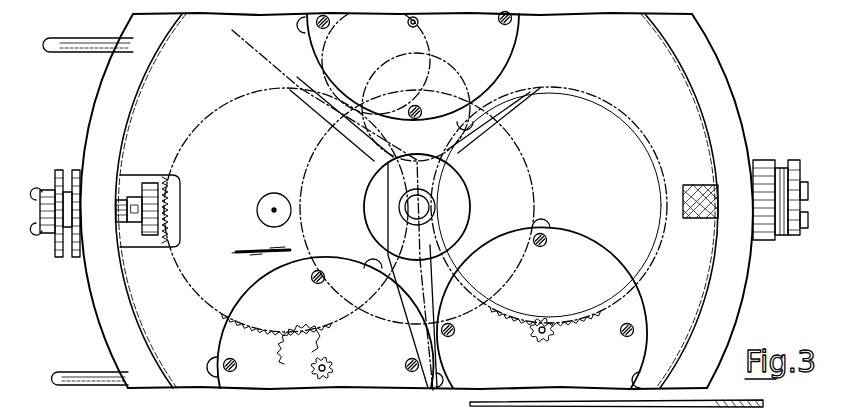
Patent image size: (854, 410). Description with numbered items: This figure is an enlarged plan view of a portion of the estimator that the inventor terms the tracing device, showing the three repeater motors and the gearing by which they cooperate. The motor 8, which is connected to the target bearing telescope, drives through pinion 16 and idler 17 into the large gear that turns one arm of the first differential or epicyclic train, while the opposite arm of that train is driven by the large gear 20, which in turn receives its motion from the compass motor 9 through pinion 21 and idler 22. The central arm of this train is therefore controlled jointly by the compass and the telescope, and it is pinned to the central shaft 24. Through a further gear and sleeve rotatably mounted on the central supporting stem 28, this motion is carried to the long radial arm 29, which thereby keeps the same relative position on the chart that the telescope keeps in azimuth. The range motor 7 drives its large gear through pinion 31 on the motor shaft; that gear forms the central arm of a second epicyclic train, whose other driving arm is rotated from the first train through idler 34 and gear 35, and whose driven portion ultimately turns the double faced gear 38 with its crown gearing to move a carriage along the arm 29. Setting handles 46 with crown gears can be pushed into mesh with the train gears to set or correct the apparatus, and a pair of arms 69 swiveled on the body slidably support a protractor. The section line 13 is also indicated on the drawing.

The section line 13- 13 is at (205, 23).
The long radial arm 29 is at (44, 194).
The setting handle 46 is at (167, 188).
The central shaft 24 is at (272, 207).
The idler 22 is at (338, 32).
The pinion 21 is at (419, 26).
The compass motor 9 is at (413, 66).
The idler 34 is at (470, 80).
The double faced gear 38 is at (520, 152).
The gear 35 is at (662, 160).
The central supporting stem 28 is at (417, 189).
The large gear 20 is at (194, 283).
The arm 69 is at (68, 372).
The motor 8 is at (326, 322).
The idler 17 is at (319, 340).
The pinion 16 is at (333, 369).
The motor 7 is at (542, 307).
The pinion 31 is at (549, 337).